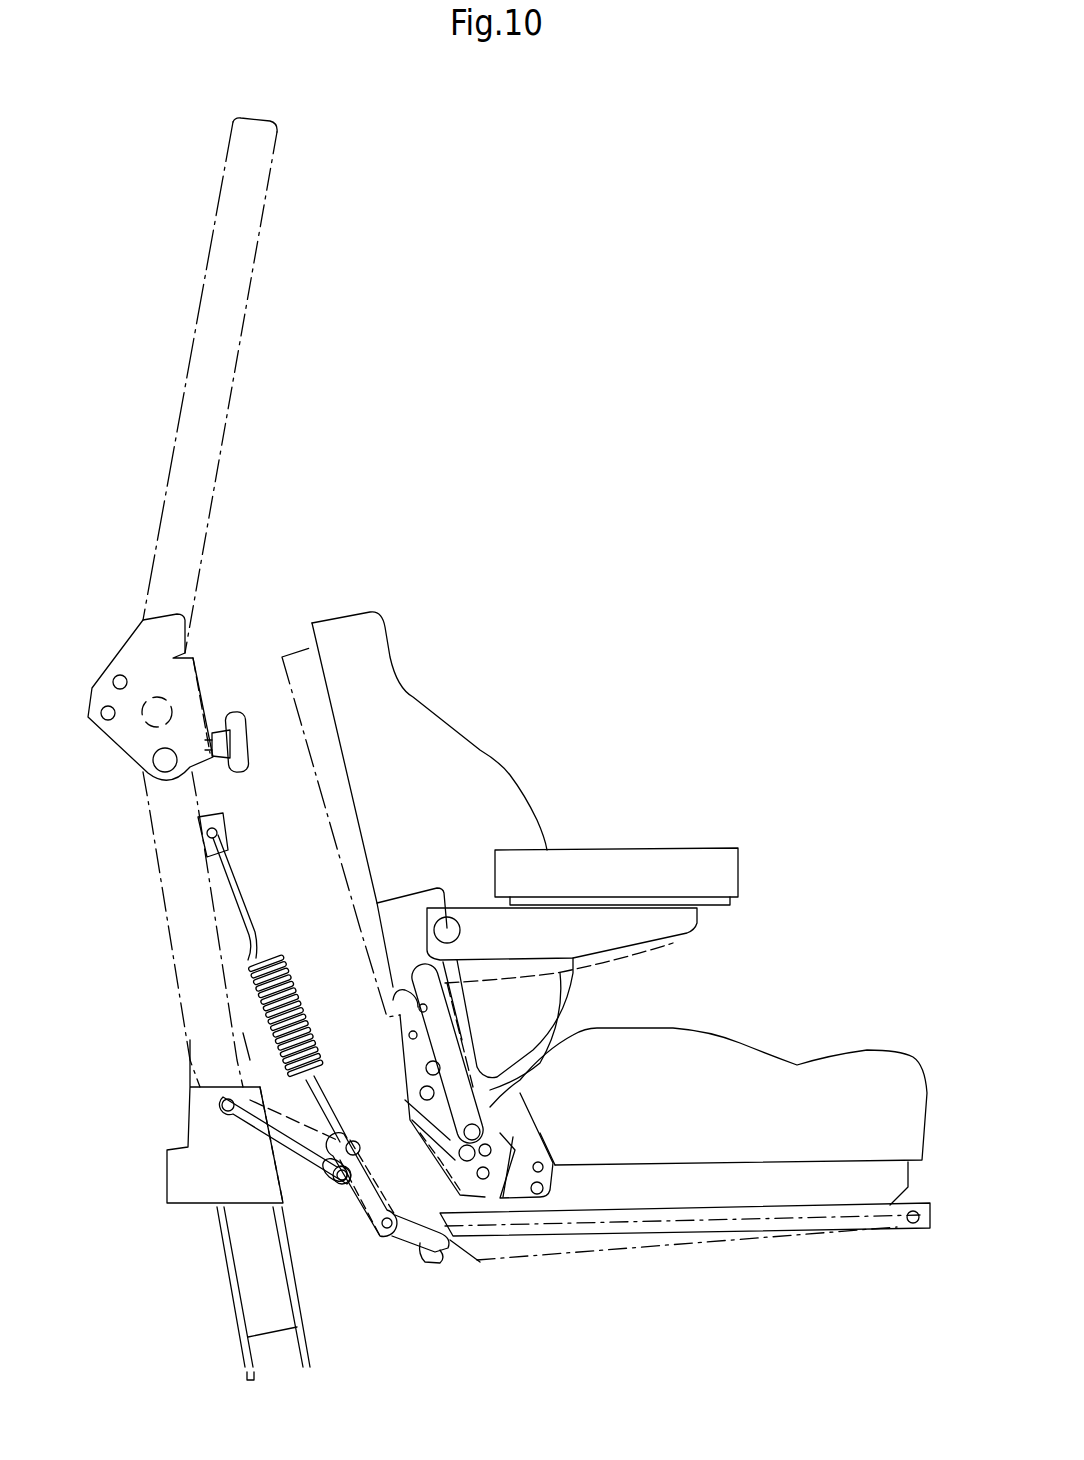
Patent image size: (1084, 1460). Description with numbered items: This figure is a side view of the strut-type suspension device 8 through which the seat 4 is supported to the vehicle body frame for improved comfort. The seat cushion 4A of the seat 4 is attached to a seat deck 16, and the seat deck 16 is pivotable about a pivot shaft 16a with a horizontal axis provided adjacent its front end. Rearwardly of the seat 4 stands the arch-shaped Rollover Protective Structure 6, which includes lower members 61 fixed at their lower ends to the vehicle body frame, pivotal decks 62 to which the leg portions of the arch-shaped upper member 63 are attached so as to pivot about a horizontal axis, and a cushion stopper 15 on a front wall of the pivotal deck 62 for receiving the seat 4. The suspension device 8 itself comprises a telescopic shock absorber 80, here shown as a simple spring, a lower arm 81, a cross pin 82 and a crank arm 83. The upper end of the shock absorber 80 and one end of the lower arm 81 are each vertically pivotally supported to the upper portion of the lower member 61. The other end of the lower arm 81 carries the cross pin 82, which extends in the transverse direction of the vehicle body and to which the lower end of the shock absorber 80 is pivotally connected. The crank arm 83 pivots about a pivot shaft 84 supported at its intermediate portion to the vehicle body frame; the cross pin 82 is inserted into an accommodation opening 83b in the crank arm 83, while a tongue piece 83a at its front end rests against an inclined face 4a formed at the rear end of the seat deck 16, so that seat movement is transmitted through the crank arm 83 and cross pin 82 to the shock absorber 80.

The Rollover Protective Structure 6 is at (198, 749).
The upper member 63 is at (232, 411).
The pivotal deck 62 is at (118, 648).
The cushion stopper 15 is at (232, 712).
The lower member 61 is at (178, 970).
The telescopic shock absorber 80 is at (288, 1000).
The seat 4 is at (525, 790).
The seat cushion 4A is at (838, 1080).
The suspension device 8 is at (357, 1148).
The lower arm 81 is at (258, 1140).
The accommodation opening 83b is at (330, 1185).
The cross pin 82 is at (343, 1184).
The crank arm 83 is at (410, 1247).
The pivot shaft 84 is at (387, 1230).
The tongue piece 83a is at (450, 1238).
The inclined face 4a is at (432, 1225).
The seat deck 16 is at (696, 1263).
The pivot shaft 16a is at (915, 1225).